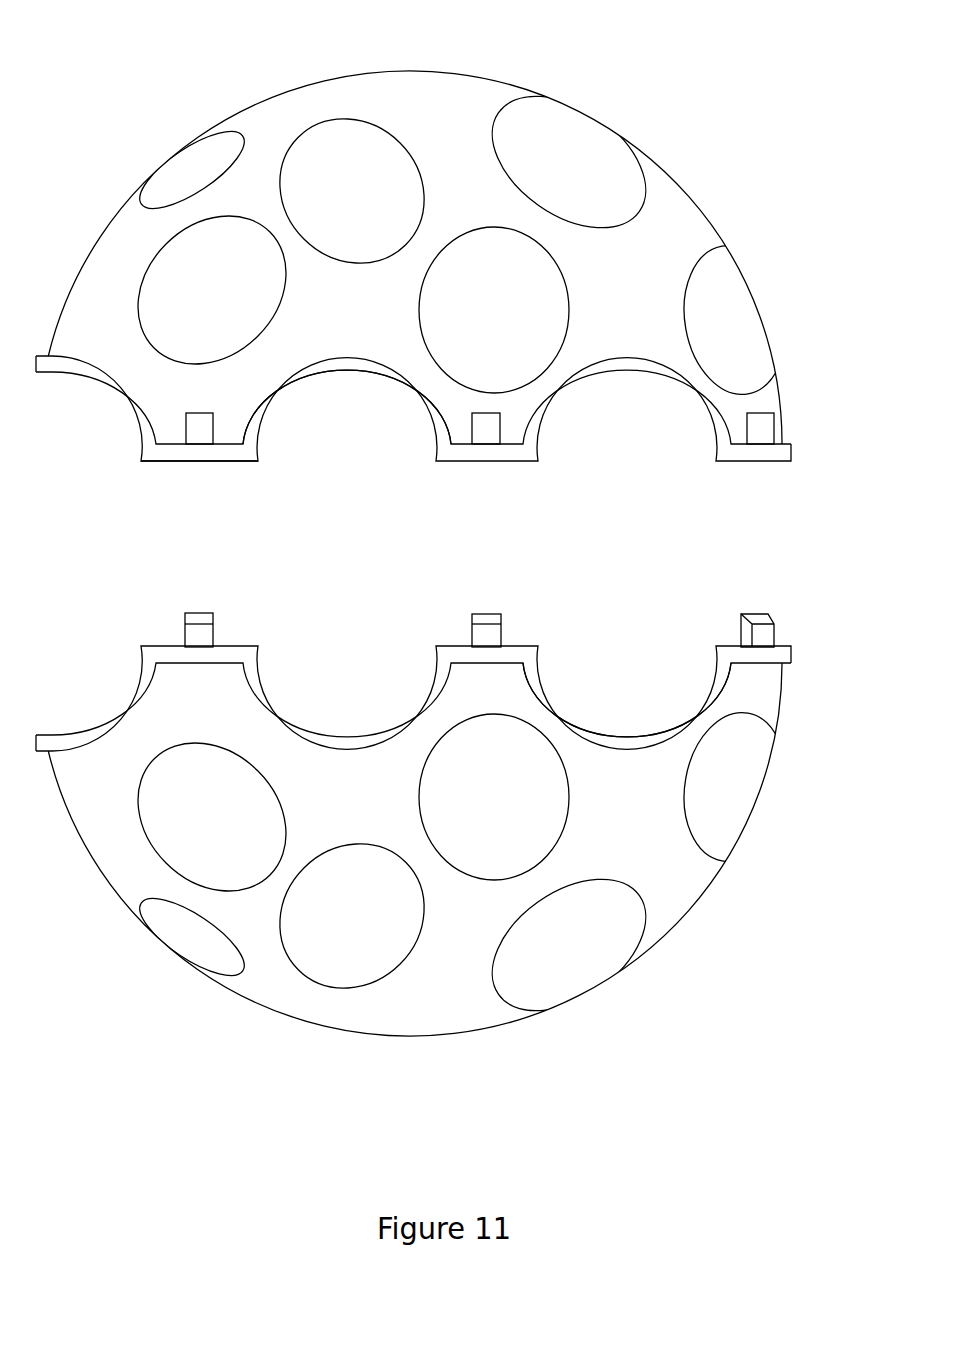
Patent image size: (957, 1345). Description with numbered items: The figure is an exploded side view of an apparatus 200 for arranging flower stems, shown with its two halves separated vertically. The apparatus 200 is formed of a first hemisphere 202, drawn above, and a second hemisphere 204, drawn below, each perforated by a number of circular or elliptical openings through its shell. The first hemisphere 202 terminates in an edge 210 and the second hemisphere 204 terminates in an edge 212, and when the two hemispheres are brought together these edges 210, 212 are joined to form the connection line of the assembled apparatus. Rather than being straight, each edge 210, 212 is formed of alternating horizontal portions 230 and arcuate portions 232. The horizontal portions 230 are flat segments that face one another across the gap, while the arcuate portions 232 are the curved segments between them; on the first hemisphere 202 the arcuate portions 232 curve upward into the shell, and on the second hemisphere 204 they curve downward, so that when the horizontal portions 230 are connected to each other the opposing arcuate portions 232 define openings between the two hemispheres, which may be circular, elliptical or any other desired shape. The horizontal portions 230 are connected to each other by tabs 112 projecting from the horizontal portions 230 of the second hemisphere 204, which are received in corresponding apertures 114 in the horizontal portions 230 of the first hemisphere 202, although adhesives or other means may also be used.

The apparatus 200 is at (669, 68).
The first hemisphere 202 is at (693, 200).
The second hemisphere 204 is at (698, 898).
The edge of first hemisphere 210 is at (757, 461).
The edge of second hemisphere 212 is at (784, 646).
The horizontal portion 230 is at (198, 462).
The arcuate portion 232 is at (302, 387).
The tab 112 is at (198, 613).
The aperture 114 is at (762, 417).